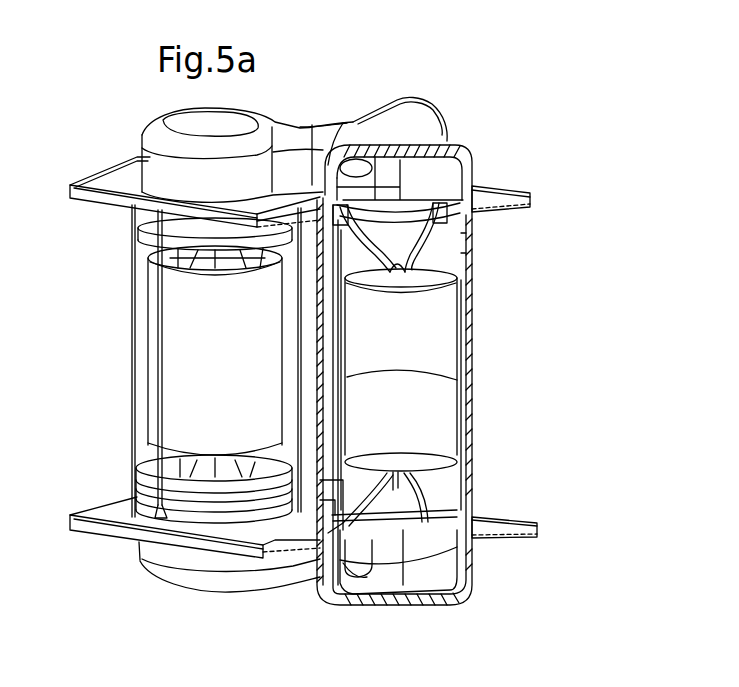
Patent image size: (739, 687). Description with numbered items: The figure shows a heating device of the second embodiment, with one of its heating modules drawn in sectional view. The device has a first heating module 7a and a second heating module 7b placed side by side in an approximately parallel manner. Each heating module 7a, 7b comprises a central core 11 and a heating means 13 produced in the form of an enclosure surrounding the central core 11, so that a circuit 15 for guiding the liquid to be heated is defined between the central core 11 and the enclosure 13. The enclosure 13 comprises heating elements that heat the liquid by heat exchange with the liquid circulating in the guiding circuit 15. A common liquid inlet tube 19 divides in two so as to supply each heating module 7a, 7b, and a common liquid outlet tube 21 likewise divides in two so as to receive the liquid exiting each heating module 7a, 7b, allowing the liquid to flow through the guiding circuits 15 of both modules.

The first heating module 7a is at (119, 570).
The second heating module 7b is at (424, 608).
The central core 11 is at (148, 391).
The heating means 13 is at (132, 332).
The circuit for guiding the liquid 15 is at (148, 278).
The liquid inlet 19 is at (413, 113).
The liquid outlet 21 is at (308, 590).